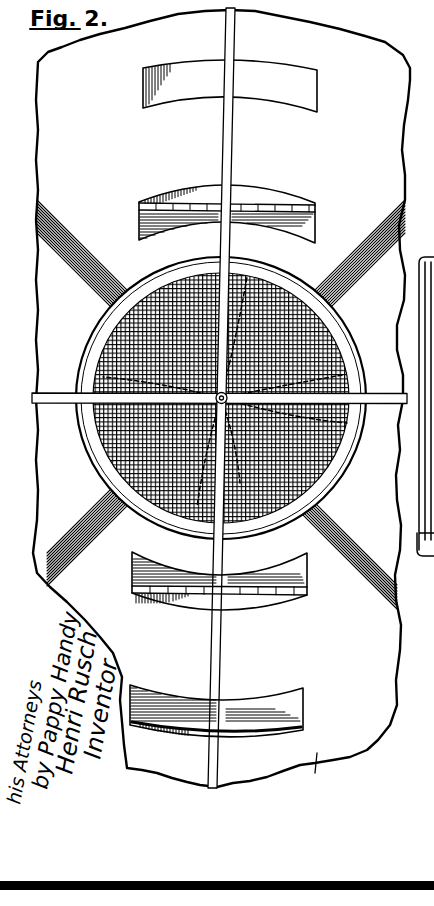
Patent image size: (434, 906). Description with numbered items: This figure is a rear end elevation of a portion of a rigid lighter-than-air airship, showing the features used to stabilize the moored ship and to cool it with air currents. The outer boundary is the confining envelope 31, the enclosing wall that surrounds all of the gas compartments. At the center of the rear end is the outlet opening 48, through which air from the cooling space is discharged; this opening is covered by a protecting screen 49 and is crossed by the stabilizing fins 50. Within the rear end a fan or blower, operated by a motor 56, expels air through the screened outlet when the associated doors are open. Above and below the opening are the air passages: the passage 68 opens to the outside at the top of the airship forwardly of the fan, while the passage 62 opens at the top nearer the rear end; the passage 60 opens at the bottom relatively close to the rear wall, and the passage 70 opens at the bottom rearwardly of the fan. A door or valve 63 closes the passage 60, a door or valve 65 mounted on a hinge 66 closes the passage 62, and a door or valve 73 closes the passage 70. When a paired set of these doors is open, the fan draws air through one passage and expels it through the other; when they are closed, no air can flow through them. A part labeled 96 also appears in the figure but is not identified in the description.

The housing wall 96 is at (295, 35).
The passage 68 is at (295, 82).
The passage 62 is at (245, 195).
The hinge 66 is at (283, 207).
The door or valve 65 is at (303, 230).
The motor 56 is at (273, 283).
The outlet opening 48 is at (320, 353).
The protecting screen 49 is at (323, 452).
The stabilizing fins 50 is at (71, 403).
The door or valve 73 is at (297, 573).
The passage 70 is at (277, 598).
The door or valve 63 is at (292, 712).
The passage 60 is at (238, 737).
The confining envelope 31 is at (316, 775).